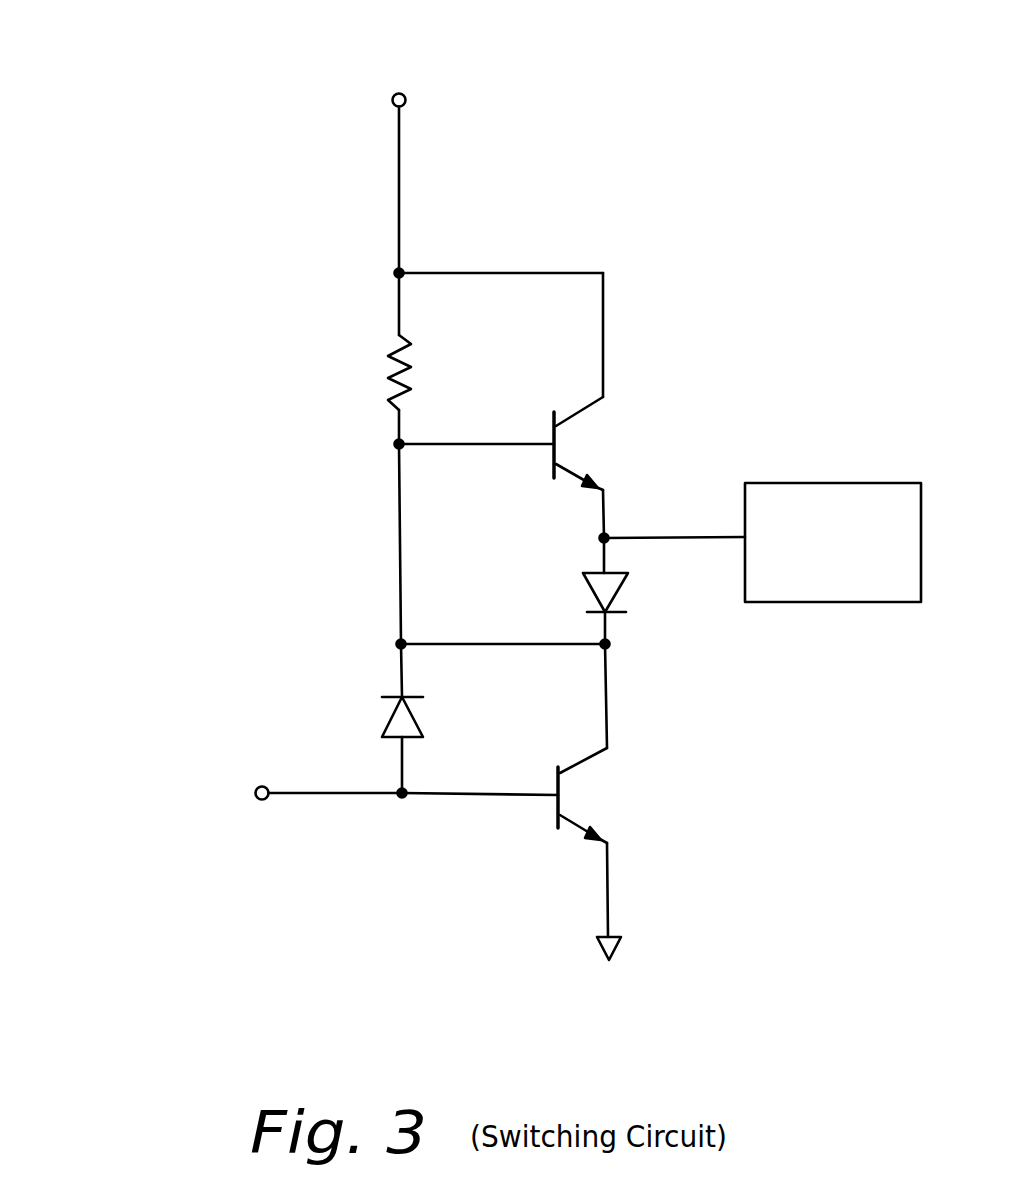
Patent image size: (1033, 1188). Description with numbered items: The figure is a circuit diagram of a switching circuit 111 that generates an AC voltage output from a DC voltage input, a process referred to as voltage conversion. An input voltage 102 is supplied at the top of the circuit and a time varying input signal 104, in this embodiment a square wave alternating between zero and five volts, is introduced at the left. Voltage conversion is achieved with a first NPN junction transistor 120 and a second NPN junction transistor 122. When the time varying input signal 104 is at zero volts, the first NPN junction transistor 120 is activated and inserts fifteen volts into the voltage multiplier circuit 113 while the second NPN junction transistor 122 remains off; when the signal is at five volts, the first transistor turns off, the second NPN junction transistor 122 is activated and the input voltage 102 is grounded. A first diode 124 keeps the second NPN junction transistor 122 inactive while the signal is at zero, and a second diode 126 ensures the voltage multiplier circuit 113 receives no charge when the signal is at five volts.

The input voltage 102 is at (443, 58).
The time varying input signal 104 is at (133, 843).
The switching circuit 111 is at (838, 197).
The voltage multiplier circuit 113 is at (837, 482).
The first NPN junction transistor 120 is at (607, 430).
The second NPN junction transistor 122 is at (608, 803).
The first diode 124 is at (382, 710).
The second diode 126 is at (628, 600).